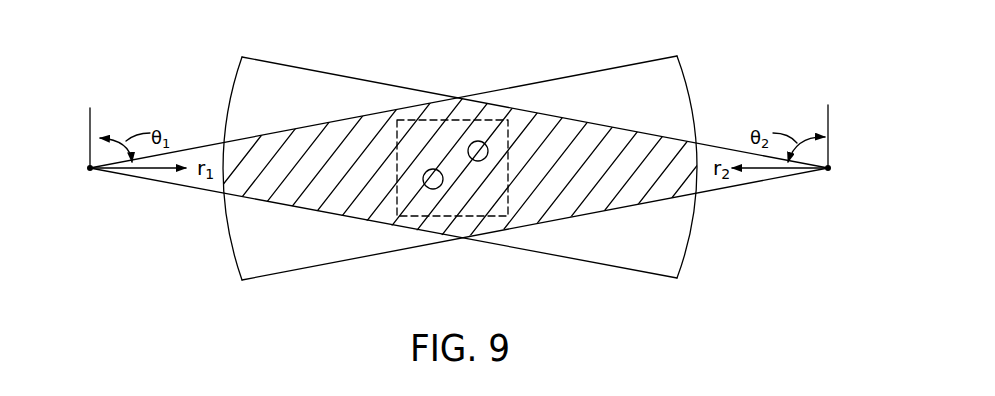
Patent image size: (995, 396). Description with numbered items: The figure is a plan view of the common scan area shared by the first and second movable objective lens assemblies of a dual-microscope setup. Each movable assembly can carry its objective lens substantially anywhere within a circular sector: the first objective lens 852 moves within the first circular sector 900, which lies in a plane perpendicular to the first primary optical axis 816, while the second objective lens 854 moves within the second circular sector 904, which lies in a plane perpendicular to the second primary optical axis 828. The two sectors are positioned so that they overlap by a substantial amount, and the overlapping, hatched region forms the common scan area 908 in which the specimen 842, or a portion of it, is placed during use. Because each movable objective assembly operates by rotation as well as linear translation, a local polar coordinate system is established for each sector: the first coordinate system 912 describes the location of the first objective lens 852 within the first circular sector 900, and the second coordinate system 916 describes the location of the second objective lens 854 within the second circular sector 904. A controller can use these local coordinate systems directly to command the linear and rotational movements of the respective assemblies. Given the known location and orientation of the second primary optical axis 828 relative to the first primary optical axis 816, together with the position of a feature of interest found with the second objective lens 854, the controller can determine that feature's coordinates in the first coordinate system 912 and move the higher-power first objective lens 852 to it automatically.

The first primary optical axis 816 is at (830, 169).
The second primary optical axis 828 is at (90, 168).
The specimen 842 is at (436, 117).
The first objective lens 852 is at (484, 143).
The second objective lens 854 is at (434, 189).
The first circular sector 900 is at (242, 76).
The second circular sector 904 is at (644, 74).
The common scan area 908 is at (350, 203).
The first coordinate system 912 is at (808, 113).
The second coordinate system 916 is at (112, 115).